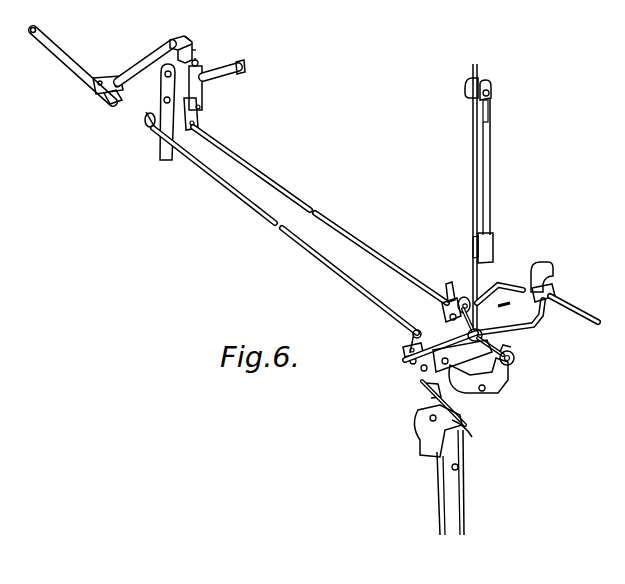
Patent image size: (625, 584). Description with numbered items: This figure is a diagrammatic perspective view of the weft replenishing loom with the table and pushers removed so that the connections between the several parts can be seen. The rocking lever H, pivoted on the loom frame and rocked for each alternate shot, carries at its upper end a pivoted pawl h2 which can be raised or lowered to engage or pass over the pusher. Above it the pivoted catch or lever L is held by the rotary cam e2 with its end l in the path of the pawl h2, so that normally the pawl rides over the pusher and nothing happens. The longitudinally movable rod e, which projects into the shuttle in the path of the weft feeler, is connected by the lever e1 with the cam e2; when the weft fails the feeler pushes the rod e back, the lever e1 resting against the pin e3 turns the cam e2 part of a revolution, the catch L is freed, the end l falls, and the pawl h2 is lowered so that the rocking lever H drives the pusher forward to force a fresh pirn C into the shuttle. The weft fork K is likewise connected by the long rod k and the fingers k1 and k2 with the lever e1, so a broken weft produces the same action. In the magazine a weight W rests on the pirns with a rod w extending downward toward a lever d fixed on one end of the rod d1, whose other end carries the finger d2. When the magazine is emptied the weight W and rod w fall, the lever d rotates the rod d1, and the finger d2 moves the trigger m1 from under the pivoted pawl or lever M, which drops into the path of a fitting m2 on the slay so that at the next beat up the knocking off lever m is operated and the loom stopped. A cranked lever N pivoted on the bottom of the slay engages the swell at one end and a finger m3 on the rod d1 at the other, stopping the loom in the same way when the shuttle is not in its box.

The knocking off lever m is at (77, 66).
The pivoted pawl or lever M is at (168, 50).
The fitting m2 is at (202, 47).
The trigger or pivoted catch m1 is at (168, 150).
The finger d2 is at (152, 114).
The finger k1 is at (186, 114).
The weft fork K is at (224, 84).
The rod k is at (320, 215).
The rod d1 is at (272, 222).
The rod w is at (484, 198).
The weight W is at (489, 162).
The finger k2 is at (450, 292).
The pin e3 is at (464, 301).
The rod e is at (521, 287).
The lever N is at (548, 272).
The pirn C is at (578, 306).
The lever e1 is at (466, 333).
The rotary cam e2 is at (507, 351).
The finger m3 is at (420, 381).
The lever d is at (462, 356).
The end l is at (476, 376).
The pivoted catch or lever L is at (462, 400).
The pawl h2 is at (470, 431).
The rocking lever H is at (460, 513).